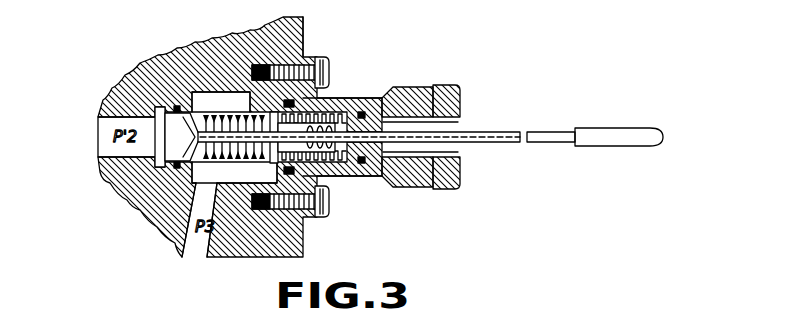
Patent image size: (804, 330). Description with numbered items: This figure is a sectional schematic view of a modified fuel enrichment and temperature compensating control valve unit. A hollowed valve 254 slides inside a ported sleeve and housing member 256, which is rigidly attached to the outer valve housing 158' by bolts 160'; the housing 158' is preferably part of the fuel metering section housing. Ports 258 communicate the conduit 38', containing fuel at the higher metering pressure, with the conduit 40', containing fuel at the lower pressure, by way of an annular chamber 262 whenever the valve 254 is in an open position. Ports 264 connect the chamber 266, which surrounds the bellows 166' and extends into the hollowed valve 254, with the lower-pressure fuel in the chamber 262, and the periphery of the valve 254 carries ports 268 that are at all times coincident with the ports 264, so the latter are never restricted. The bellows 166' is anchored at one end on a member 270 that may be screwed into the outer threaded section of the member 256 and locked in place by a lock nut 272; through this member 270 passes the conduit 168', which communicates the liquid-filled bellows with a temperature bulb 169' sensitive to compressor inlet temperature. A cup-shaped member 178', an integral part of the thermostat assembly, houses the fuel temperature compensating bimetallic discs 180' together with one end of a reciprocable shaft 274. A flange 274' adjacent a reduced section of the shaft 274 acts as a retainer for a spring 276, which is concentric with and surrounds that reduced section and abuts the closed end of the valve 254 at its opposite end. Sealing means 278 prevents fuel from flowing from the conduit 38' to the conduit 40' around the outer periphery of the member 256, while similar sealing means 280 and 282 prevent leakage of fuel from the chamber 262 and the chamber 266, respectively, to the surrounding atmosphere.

The outer valve housing 158' is at (221, 137).
The sealing means 278 is at (143, 66).
The conduit 38' is at (99, 145).
The ports 258 is at (190, 183).
The annular chamber 262 is at (220, 110).
The valve 254 is at (213, 97).
The ports 268 is at (248, 167).
The cup-shaped member 178' is at (267, 196).
The ports 264 is at (221, 110).
The reciprocable shaft 274 is at (334, 107).
The bellows 166' is at (328, 163).
The spring 276 is at (256, 110).
The flange 274' is at (305, 47).
The sealing means 280 is at (320, 64).
The bolts 160' is at (319, 219).
The fuel temperature compensating bimetallic discs 180' is at (342, 124).
The ported sleeve and housing member 256 is at (378, 87).
The lock nut 272 is at (458, 188).
The member 270 is at (422, 190).
The sealing means 282 is at (387, 180).
The conduit 168' is at (376, 150).
The temperature bulb 169' is at (615, 142).
The conduit 40' is at (175, 230).
The chamber 266 is at (253, 163).